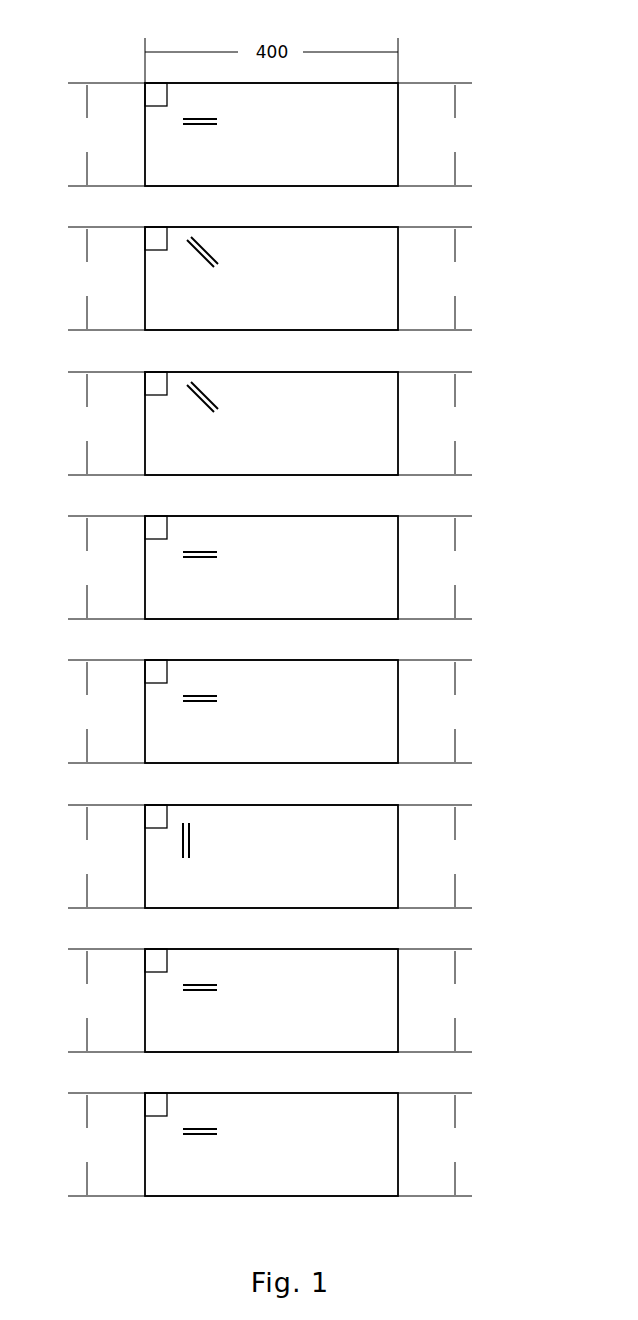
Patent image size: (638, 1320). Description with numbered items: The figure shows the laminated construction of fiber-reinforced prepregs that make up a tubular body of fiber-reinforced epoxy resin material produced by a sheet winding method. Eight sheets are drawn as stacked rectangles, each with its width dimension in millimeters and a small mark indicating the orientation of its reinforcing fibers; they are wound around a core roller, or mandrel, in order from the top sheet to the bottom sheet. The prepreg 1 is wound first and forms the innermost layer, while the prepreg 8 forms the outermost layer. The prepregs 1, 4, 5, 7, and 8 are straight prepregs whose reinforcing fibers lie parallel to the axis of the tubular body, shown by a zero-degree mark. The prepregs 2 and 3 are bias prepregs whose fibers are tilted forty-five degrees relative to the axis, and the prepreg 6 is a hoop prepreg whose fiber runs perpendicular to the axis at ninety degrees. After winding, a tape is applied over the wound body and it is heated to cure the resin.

The prepreg 1 is at (362, 132).
The prepreg 2 is at (362, 276).
The prepreg 3 is at (362, 421).
The prepreg 4 is at (362, 565).
The prepreg 5 is at (362, 709).
The prepreg 6 is at (362, 854).
The prepreg 7 is at (362, 998).
The prepreg 8 is at (362, 1142).